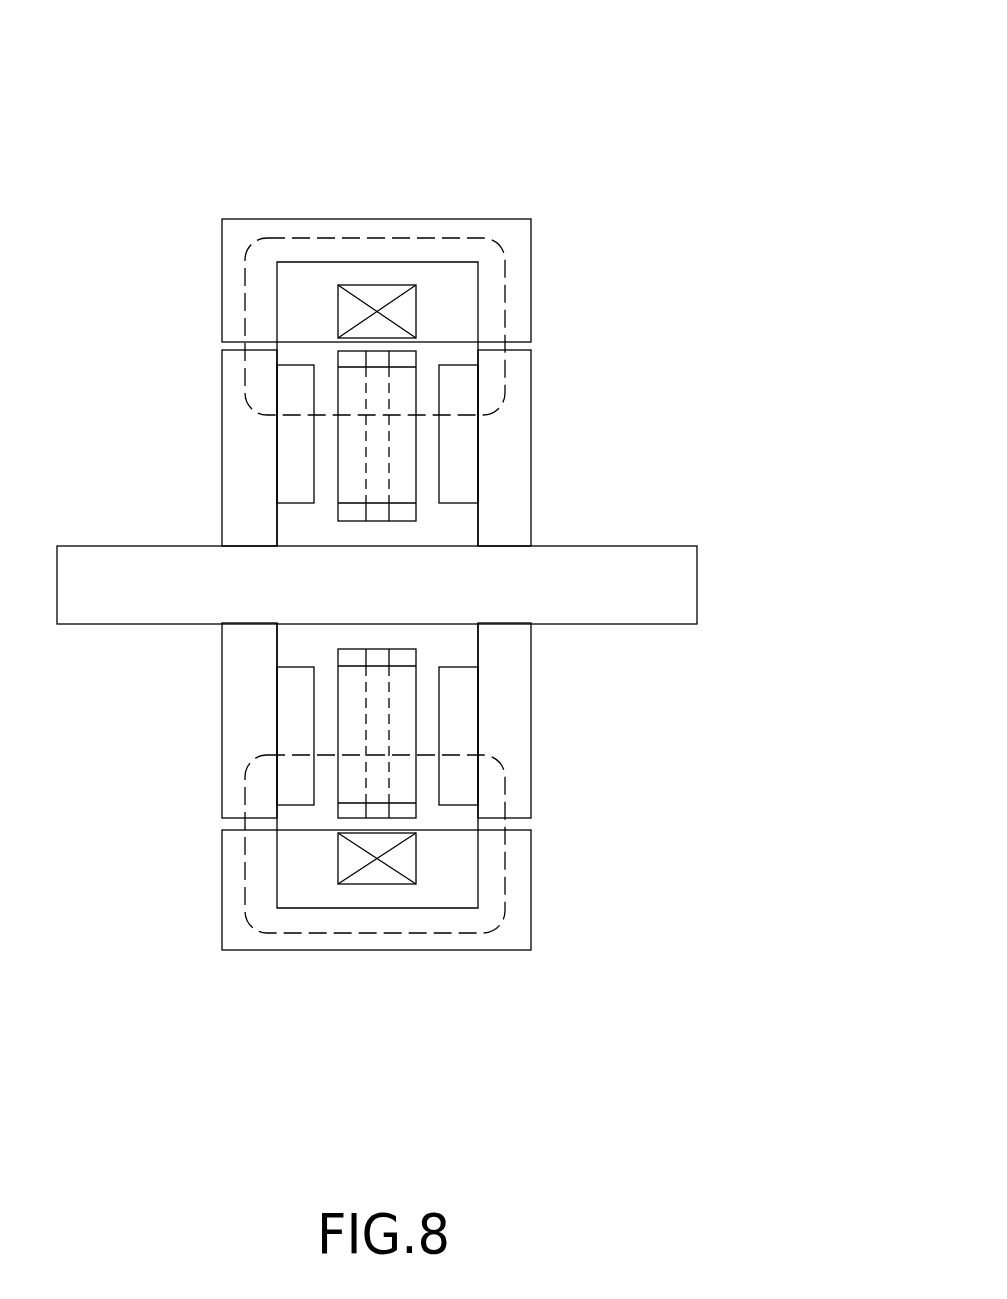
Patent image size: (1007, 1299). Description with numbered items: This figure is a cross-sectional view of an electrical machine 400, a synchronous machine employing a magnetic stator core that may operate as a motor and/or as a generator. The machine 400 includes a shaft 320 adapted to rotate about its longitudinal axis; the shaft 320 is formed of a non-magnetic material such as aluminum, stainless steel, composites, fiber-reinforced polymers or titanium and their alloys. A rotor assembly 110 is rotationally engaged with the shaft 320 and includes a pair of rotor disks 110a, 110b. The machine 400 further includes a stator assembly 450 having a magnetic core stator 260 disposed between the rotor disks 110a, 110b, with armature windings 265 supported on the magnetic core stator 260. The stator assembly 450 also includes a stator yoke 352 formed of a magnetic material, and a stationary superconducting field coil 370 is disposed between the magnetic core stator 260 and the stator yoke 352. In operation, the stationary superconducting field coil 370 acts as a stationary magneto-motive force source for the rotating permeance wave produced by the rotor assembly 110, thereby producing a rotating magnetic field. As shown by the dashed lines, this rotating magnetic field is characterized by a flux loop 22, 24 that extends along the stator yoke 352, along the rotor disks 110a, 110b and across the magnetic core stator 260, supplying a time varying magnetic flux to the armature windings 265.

The electrical machine 400 is at (683, 253).
The stator assembly 450 is at (465, 193).
The stator yoke 352 is at (515, 237).
The flux loop 22 is at (507, 300).
The flux loop 24 is at (508, 773).
The rotor assembly 110 is at (540, 372).
The rotor disk 110a is at (252, 482).
The rotor disk 110b is at (505, 450).
The magnetic core stator 260 is at (403, 700).
The armature windings 265 is at (405, 815).
The stationary superconducting field coil 370 is at (406, 853).
The shaft 320 is at (657, 602).